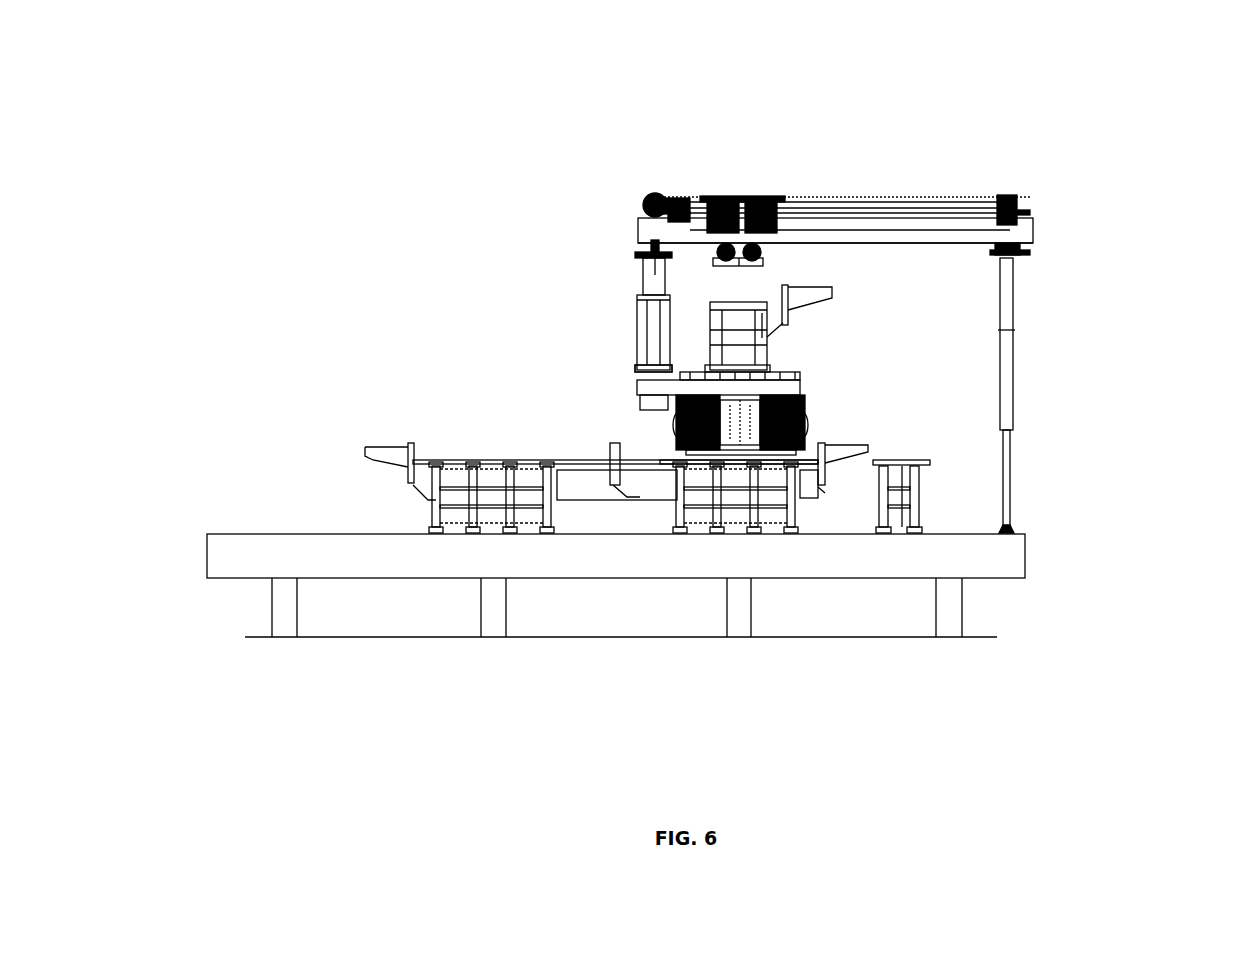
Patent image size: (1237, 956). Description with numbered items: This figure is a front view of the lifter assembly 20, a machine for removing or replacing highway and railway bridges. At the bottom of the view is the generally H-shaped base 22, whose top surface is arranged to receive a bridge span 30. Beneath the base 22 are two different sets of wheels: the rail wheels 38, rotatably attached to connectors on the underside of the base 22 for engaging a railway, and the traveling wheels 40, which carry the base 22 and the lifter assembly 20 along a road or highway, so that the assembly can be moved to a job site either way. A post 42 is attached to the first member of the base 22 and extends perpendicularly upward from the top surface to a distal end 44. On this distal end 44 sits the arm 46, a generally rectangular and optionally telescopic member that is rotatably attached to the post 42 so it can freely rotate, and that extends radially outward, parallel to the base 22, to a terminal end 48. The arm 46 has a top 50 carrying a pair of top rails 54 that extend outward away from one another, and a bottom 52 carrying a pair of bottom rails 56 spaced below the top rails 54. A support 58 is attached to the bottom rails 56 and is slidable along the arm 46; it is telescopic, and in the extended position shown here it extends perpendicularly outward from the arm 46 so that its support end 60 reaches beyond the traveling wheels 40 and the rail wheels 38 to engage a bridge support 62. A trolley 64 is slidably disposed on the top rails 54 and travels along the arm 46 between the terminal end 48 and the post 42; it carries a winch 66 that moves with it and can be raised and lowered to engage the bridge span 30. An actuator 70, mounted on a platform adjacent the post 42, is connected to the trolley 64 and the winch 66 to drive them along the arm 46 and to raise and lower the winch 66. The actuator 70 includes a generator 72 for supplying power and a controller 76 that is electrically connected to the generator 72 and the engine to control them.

The lifter assembly 20 is at (396, 249).
The base 22 is at (668, 380).
The bridge span 30 is at (760, 320).
The rail wheels 38 is at (712, 470).
The traveling wheels 40 is at (676, 445).
The post 42 is at (650, 297).
The distal end 44 is at (640, 220).
The arm 46 is at (692, 225).
The terminal end 48 is at (1028, 200).
The top 50 is at (878, 210).
The bottom 52 is at (912, 245).
The top rails 54 is at (922, 210).
The bottom rails 56 is at (962, 245).
The support 58 is at (1006, 350).
The support end 60 is at (1012, 528).
The bridge support 62 is at (1005, 567).
The trolley 64 is at (733, 240).
The winch 66 is at (723, 264).
The actuator 70 is at (628, 355).
The generator 72 is at (637, 368).
The controller 76 is at (760, 465).